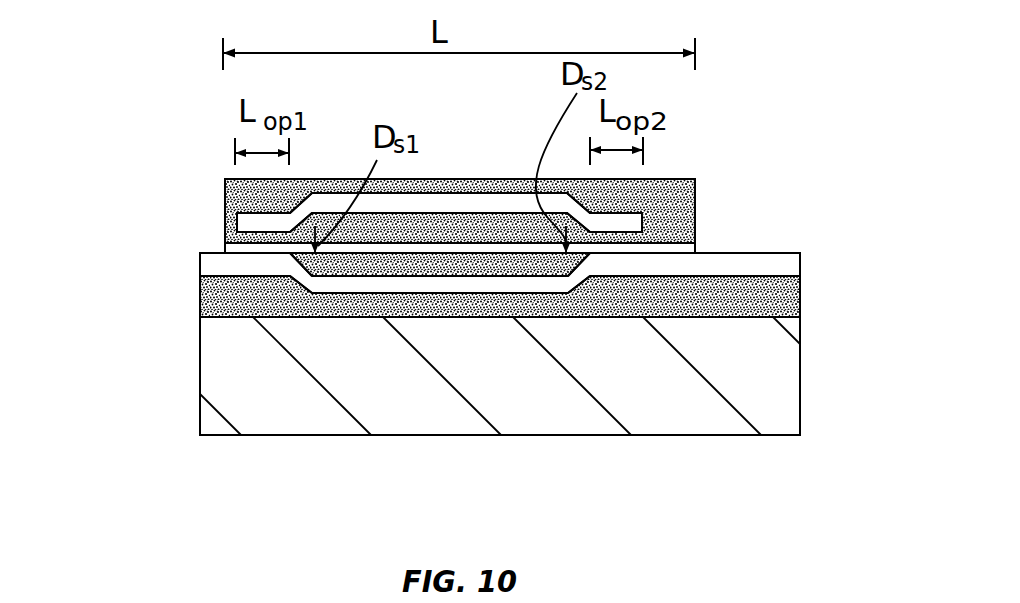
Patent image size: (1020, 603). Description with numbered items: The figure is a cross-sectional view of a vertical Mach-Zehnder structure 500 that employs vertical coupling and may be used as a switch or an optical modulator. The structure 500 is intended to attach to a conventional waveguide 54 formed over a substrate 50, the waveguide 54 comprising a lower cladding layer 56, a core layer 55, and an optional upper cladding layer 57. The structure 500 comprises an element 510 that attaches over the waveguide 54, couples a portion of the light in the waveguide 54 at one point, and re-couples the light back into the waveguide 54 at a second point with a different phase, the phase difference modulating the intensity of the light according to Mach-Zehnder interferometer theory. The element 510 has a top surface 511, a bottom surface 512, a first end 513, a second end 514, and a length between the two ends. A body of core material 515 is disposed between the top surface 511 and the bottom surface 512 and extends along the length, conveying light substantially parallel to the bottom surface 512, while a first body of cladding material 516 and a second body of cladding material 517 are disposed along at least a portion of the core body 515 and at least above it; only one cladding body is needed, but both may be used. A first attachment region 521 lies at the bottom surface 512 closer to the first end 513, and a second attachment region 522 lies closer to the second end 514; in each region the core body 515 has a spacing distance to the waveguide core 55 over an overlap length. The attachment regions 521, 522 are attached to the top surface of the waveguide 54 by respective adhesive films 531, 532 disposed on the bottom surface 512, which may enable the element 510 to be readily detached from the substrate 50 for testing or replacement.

The vertical Mach-Zehnder structure 500 is at (132, 88).
The substrate 50 is at (217, 388).
The waveguide 54 is at (222, 253).
The core layer 55 is at (217, 263).
The lower cladding layer 56 is at (215, 305).
The upper cladding layer 57 is at (292, 268).
The element 510 is at (225, 181).
The top surface 511 is at (682, 178).
The bottom surface 512 is at (680, 238).
The first end 513 is at (227, 207).
The second end 514 is at (695, 227).
The body of core material 515 is at (430, 207).
The first body of cladding material 516 is at (413, 180).
The second body of cladding material 517 is at (437, 230).
The first attachment region 521 is at (239, 245).
The second attachment region 522 is at (638, 245).
The adhesive film 531 is at (225, 249).
The adhesive film 532 is at (687, 249).